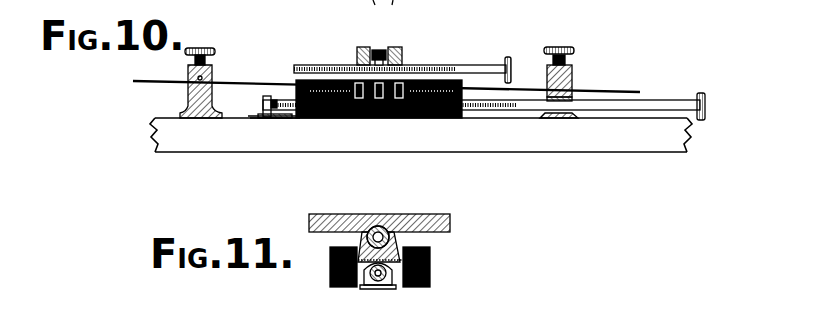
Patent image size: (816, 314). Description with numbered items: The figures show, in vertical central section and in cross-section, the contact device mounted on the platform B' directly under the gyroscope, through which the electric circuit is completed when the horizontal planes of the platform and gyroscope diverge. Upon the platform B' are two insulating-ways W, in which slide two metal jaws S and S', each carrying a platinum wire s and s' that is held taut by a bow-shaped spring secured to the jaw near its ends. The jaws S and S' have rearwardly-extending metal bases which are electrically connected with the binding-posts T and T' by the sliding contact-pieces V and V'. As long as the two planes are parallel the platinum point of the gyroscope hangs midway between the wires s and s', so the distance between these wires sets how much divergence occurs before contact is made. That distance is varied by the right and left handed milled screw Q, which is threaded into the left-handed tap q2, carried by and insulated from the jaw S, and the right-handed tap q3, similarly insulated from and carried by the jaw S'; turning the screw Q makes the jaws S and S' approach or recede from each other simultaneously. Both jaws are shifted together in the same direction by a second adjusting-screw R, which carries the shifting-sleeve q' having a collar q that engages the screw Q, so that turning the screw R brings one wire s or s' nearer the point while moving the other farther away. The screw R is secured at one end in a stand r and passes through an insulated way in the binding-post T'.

In FIG. 10, the platform B' is at (421, 152).
In FIG. 10, the sliding contact-piece V is at (386, 72).
In FIG. 10, the sliding contact-piece V' is at (610, 78).
In FIG. 10, the binding-post T is at (181, 83).
In FIG. 10, the binding-post T' is at (572, 82).
In FIG. 10, the insulating-way W is at (330, 120).
In FIG. 11, the insulating-way W is at (332, 288).
In FIG. 10, the adjusting-screw R is at (522, 142).
In FIG. 11, the adjusting-screw R is at (372, 292).
In FIG. 10, the stand r is at (263, 102).
In FIG. 10, the milled screw Q is at (452, 65).
In FIG. 11, the milled screw Q is at (362, 237).
In FIG. 10, the platinum wire s is at (364, 47).
In FIG. 10, the platinum wire s' is at (387, 47).
In FIG. 10, the metal jaw S is at (341, 36).
In FIG. 11, the metal jaw S is at (398, 225).
In FIG. 10, the metal jaw S' is at (418, 39).
In FIG. 10, the collar q is at (397, 34).
In FIG. 10, the shifting-sleeve q' is at (399, 151).
In FIG. 11, the shifting-sleeve q' is at (425, 298).
In FIG. 10, the left-handed tap q2 is at (357, 63).
In FIG. 11, the left-handed tap q2 is at (378, 214).
In FIG. 10, the right-handed tap q3 is at (403, 60).